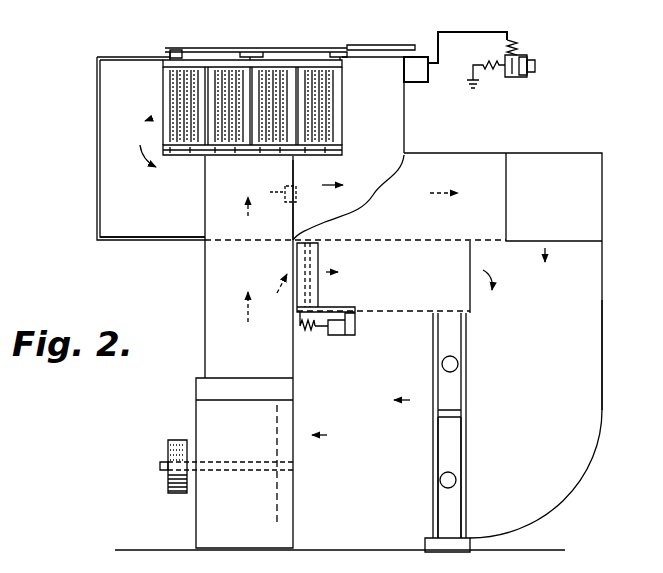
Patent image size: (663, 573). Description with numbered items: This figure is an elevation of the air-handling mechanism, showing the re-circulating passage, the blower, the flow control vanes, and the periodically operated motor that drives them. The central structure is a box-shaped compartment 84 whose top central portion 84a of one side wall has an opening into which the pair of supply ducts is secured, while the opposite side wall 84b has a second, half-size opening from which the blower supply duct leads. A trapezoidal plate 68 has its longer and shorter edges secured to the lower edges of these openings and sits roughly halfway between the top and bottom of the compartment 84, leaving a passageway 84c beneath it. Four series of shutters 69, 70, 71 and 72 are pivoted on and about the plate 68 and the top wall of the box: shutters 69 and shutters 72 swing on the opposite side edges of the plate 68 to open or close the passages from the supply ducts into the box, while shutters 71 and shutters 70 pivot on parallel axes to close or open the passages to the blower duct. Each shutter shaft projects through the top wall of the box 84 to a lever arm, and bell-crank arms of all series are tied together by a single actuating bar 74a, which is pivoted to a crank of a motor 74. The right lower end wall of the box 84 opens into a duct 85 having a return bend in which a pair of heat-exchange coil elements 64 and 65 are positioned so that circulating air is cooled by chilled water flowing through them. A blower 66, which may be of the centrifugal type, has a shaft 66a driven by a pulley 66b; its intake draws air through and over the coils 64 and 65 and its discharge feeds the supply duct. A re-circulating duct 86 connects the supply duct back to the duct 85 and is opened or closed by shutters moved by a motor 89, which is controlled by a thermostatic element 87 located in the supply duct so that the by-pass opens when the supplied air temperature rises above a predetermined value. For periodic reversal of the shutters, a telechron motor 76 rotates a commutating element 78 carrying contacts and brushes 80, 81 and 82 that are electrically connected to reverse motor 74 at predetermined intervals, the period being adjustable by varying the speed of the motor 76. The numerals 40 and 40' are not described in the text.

The box-shaped compartment 84 is at (97, 140).
The top central portion of side wall 84a is at (170, 57).
The side wall 84b is at (114, 243).
The passageway 84c is at (313, 200).
The duct 85 is at (559, 357).
The heat-exchange coil element 64 is at (445, 337).
The heat-exchange coil element 65 is at (440, 442).
The pipe 40 is at (471, 361).
The pipe 40' is at (475, 476).
The blower 66 is at (294, 420).
The blower shaft 66a is at (163, 462).
The pulley 66b is at (167, 488).
The trapezoidal plate 68 is at (182, 156).
The shutters 69 is at (163, 92).
The shutters 70 is at (276, 156).
The shutters 71 is at (230, 156).
The shutters 72 is at (322, 112).
The motor 74 is at (420, 80).
The actuating bar 74a is at (206, 52).
The contact and brush 82 is at (507, 47).
The contact and brush 80 is at (523, 53).
The telechron motor 76 is at (536, 66).
The commutating element 78 is at (522, 78).
The contact and brush 81 is at (508, 78).
The thermostatic element 87 is at (278, 202).
The re-circulating duct 86 is at (390, 312).
The motor 89 is at (334, 335).